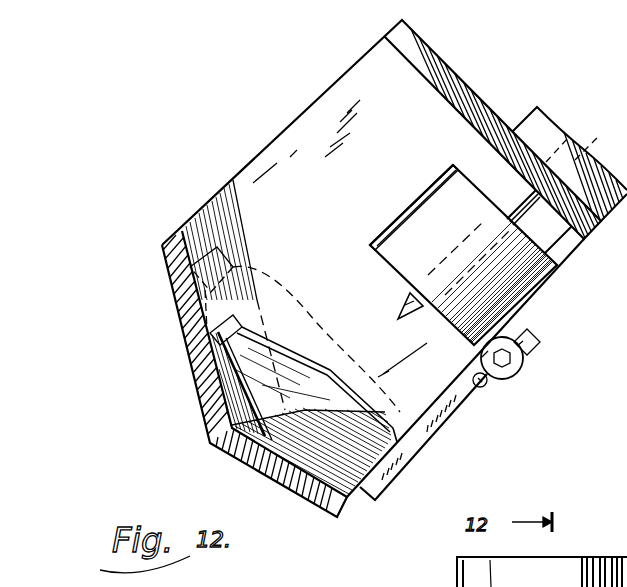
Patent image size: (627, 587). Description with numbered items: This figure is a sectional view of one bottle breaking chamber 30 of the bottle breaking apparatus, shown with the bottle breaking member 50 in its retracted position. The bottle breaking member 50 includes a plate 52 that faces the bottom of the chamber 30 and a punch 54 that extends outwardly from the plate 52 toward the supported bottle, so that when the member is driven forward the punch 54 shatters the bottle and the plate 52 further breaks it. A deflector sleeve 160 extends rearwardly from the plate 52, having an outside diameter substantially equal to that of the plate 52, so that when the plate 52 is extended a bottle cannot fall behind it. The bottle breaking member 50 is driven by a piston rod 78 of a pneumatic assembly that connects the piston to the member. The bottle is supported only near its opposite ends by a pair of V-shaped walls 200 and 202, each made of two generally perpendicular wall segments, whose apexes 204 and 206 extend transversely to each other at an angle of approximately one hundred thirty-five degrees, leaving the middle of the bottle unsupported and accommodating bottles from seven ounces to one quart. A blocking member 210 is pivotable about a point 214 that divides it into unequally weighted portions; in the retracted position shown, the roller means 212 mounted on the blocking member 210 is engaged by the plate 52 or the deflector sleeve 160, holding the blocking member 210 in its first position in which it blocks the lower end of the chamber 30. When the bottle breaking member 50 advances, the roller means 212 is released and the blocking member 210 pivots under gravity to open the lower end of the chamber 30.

The chamber 30 is at (310, 94).
The bottle breaking member 50 is at (360, 222).
The plate 52 is at (350, 258).
The punch 54 is at (365, 305).
The piston rod 78 is at (510, 196).
The deflector sleeve 160 is at (434, 178).
The V-shaped wall 200 is at (183, 305).
The V-shaped wall 202 is at (237, 458).
The apex 204 is at (205, 404).
The apex 206 is at (323, 510).
The blocking member 210 is at (426, 441).
The roller means 212 is at (526, 336).
The pivot point 214 is at (487, 387).